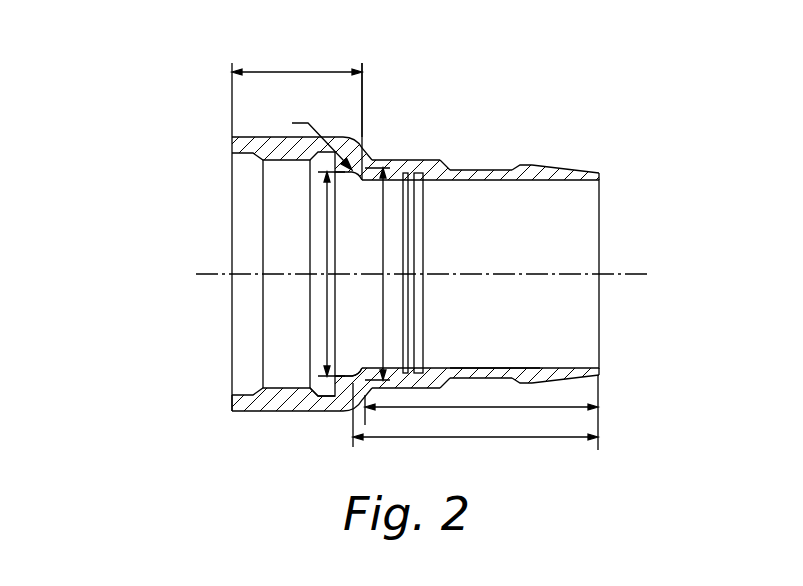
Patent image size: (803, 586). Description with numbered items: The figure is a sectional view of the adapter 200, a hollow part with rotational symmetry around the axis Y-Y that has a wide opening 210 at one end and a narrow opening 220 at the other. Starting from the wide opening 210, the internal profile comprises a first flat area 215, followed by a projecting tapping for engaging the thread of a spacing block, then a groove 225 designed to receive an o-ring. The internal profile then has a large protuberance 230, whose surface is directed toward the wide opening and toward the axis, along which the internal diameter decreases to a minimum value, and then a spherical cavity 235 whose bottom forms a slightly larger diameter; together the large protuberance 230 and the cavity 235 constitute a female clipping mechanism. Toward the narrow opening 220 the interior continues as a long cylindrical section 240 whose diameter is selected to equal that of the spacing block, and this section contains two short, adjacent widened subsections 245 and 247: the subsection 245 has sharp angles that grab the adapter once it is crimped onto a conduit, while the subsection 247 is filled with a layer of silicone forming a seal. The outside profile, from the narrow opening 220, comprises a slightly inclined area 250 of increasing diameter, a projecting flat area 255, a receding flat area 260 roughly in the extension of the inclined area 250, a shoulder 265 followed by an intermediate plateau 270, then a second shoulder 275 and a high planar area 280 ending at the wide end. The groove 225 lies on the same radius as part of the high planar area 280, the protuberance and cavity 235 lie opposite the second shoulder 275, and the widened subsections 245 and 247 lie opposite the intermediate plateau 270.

The adapter 200 is at (206, 57).
The wide opening 210 is at (160, 277).
The first flat area 215 is at (236, 397).
The narrow opening 220 is at (620, 288).
The groove 225 is at (322, 393).
The large protuberance 230 is at (336, 360).
The spherical cavity 235 is at (358, 374).
The long cylindrical section 240 is at (492, 367).
The widened subsection 245 is at (407, 305).
The widened subsection 247 is at (420, 359).
The slightly inclined area 250 is at (565, 170).
The projecting flat area 255 is at (525, 165).
The receding flat area 260 is at (480, 170).
The shoulder 265 is at (447, 159).
The intermediate plateau 270 is at (397, 160).
The second shoulder 275 is at (353, 139).
The high planar area 280 is at (270, 137).